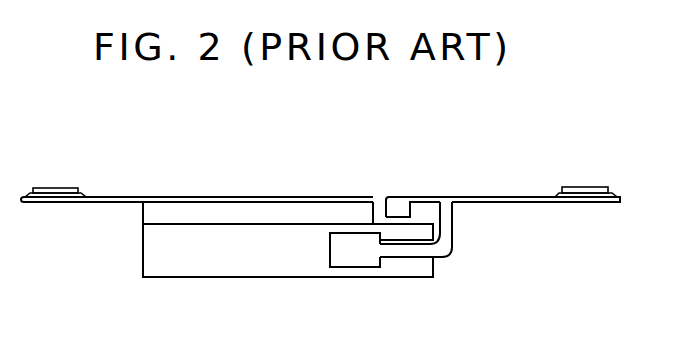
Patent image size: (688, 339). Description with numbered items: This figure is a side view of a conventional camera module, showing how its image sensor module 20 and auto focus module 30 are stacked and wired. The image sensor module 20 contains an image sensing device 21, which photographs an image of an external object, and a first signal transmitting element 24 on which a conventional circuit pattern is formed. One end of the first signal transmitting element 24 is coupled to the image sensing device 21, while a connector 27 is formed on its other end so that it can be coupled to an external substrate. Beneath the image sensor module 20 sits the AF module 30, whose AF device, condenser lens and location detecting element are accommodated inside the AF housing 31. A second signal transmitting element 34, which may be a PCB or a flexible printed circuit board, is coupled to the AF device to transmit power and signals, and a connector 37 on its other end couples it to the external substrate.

The image sensor module 20 is at (137, 214).
The image sensing device 21 is at (256, 212).
The first signal transmitting element 24 is at (192, 197).
The connector 27 is at (57, 188).
The auto focus (AF) module 30 is at (137, 272).
The AF housing 31 is at (255, 263).
The second signal transmitting element 34 is at (484, 197).
The connector 37 is at (587, 187).